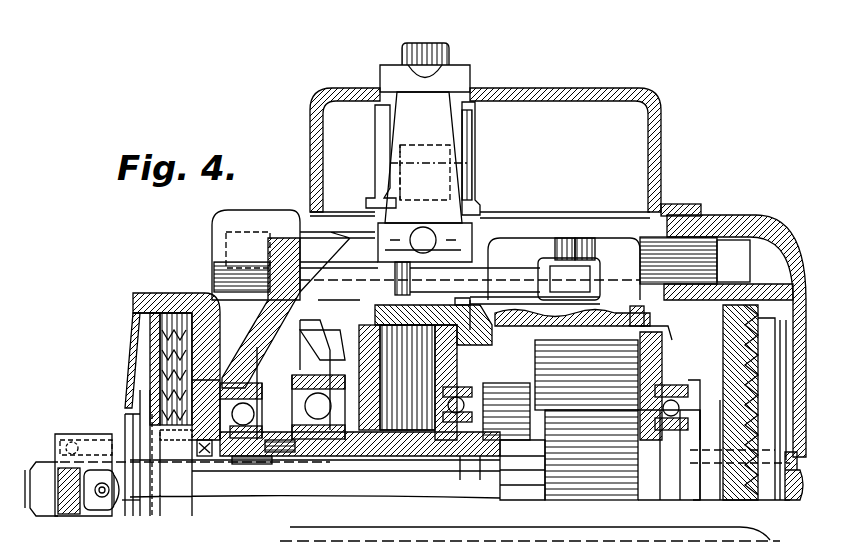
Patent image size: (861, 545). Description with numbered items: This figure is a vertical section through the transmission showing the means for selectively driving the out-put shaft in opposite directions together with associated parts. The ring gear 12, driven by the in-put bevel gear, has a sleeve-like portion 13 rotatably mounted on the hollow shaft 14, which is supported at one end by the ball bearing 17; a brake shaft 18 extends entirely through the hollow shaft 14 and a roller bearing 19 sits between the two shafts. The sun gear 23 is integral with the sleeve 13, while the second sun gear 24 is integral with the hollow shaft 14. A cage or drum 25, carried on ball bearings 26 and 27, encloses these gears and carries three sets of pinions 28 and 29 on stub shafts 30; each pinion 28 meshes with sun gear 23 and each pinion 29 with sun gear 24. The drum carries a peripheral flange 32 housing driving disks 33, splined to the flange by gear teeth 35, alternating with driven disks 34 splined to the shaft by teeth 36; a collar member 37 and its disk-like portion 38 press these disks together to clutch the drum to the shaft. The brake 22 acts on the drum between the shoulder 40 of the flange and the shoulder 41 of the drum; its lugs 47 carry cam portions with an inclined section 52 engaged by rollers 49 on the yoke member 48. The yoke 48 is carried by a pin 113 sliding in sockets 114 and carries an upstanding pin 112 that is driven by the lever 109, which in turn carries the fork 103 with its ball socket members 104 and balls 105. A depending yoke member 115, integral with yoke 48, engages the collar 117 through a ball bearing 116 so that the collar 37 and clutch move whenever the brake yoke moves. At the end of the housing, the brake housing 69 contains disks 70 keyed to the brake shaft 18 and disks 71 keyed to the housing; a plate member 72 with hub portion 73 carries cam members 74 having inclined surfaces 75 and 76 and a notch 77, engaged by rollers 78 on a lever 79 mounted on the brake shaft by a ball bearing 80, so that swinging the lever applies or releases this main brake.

The ring gear 12 is at (732, 357).
The sleeve-like portion 13 is at (692, 480).
The hollow shaft 14 is at (462, 440).
The ball bearing 17 is at (242, 402).
The brake shaft 18 is at (222, 478).
The roller bearing 19 is at (250, 466).
The brake 22 is at (640, 316).
The sun gear 23 is at (614, 470).
The second sun gear 24 is at (520, 490).
The cage or drum 25 is at (648, 326).
The ball bearing 26 is at (688, 405).
The ball bearing 27 is at (474, 398).
The pinion 28 is at (545, 358).
The pinion 29 is at (498, 395).
The stub shaft 30 is at (658, 370).
The peripheral flange 32 is at (392, 300).
The driving disks 33 is at (372, 330).
The driven disks 34 is at (418, 430).
The gear teeth 35 is at (370, 318).
The teeth 36 is at (284, 440).
The collar member 37 is at (345, 436).
The disk-like portion 38 is at (378, 430).
The shoulder 40 is at (470, 305).
The shoulder 41 is at (636, 310).
The lugs 47 is at (578, 242).
The yoke member 48 is at (504, 268).
The rollers 49 is at (592, 255).
The downwardly inclined section 52 is at (553, 258).
The brake housing 69 is at (185, 300).
The disks 70 is at (160, 337).
The disks 71 is at (170, 318).
The plate member 72 is at (150, 356).
The hub portion 73 is at (142, 412).
The cam members 74 is at (130, 496).
The inclined cam surface 75 is at (116, 502).
The inclined cam surface 76 is at (110, 474).
The notch 77 is at (112, 490).
The rollers 78 is at (70, 500).
The lever 79 is at (62, 512).
The ball bearing 80 is at (68, 438).
The fork or yoke member 103 is at (425, 100).
The ball socket members 104 is at (438, 45).
The ball 105 is at (405, 64).
The lever 109 is at (455, 152).
The upstanding pin 112 is at (460, 172).
The pin 113 is at (638, 248).
The sockets 114 is at (734, 250).
The depending yoke member 115 is at (320, 334).
The ball bearing 116 is at (312, 400).
The collar 117 is at (316, 436).